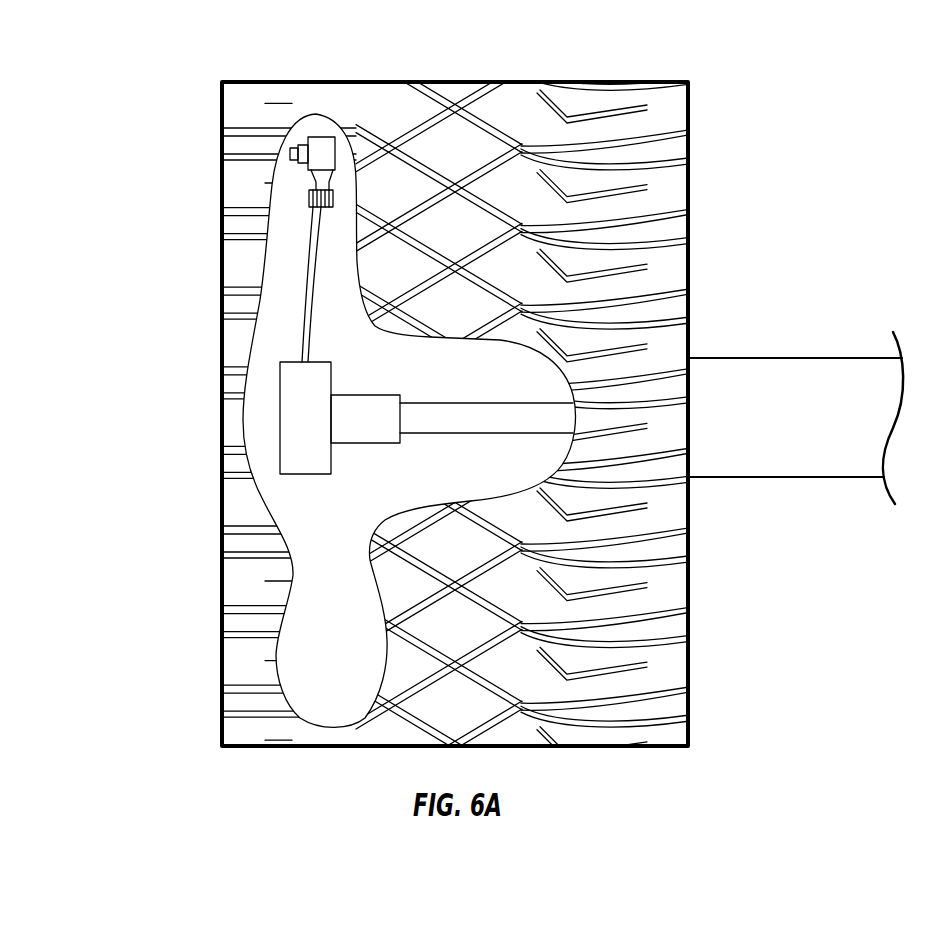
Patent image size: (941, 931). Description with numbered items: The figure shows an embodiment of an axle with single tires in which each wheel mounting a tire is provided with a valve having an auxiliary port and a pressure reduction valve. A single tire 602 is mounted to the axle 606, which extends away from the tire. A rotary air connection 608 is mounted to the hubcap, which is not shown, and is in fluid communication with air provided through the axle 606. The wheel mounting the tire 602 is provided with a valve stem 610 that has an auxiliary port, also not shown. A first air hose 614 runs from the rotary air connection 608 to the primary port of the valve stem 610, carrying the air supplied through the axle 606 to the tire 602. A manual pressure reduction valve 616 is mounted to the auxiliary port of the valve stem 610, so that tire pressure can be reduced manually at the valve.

The single tire 602 is at (374, 80).
The axle 606 is at (784, 358).
The rotary air connection 608 is at (280, 418).
The valve stem 610 is at (320, 137).
The first air hose 614 is at (307, 267).
The manual pressure reduction valve 616 is at (303, 163).